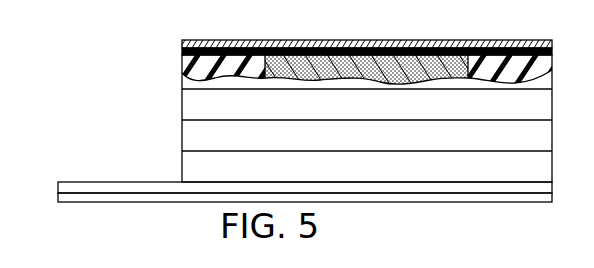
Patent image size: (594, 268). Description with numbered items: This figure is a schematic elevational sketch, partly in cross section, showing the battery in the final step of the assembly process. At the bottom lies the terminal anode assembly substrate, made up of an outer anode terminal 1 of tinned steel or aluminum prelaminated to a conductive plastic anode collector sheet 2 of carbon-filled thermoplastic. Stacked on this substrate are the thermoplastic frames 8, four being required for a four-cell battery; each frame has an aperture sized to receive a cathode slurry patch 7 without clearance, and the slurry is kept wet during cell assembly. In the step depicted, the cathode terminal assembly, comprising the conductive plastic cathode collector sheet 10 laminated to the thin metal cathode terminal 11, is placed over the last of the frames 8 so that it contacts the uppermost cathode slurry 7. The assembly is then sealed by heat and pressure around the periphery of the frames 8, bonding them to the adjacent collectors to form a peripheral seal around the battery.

The outer anode terminal 1 is at (103, 195).
The anode collector sheet 2 is at (79, 189).
The cathode slurry patch 7 is at (424, 79).
The frames 8 is at (520, 70).
The cathode collector sheet 10 is at (309, 52).
The cathode terminal 11 is at (375, 51).